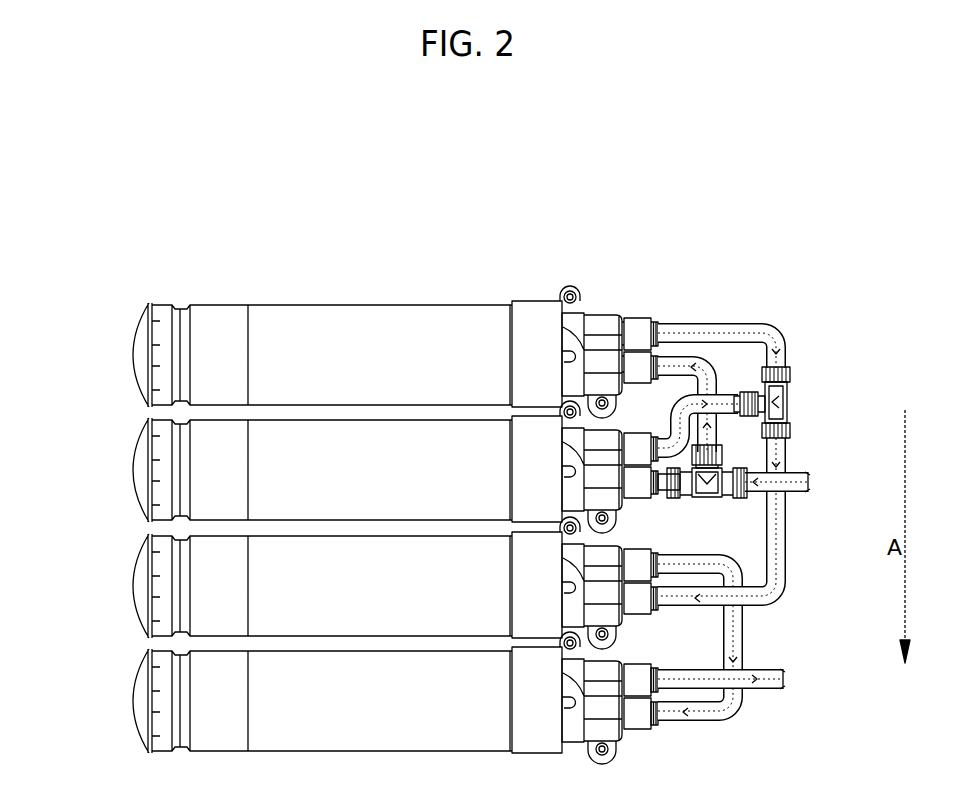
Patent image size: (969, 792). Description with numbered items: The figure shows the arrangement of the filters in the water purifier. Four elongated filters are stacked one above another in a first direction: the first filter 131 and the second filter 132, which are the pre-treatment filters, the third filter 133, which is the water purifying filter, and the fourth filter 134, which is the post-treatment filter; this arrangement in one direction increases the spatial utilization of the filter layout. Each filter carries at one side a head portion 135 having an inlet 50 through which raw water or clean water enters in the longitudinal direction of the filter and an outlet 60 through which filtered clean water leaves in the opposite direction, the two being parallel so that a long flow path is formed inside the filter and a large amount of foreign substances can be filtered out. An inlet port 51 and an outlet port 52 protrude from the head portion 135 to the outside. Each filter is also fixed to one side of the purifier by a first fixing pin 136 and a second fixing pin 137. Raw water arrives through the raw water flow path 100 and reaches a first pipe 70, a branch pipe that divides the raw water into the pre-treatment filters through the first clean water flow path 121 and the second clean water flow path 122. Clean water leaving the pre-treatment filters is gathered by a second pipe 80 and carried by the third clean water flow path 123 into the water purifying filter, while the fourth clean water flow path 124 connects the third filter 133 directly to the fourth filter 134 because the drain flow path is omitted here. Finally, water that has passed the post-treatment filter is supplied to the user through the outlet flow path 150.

The first filter 131 is at (100, 345).
The second filter 132 is at (100, 465).
The third filter 133 is at (100, 591).
The fourth filter 134 is at (100, 701).
The head portion 135 is at (615, 286).
The first fixing pin 136 is at (568, 289).
The second fixing pin 137 is at (618, 404).
The outlet 60 is at (638, 318).
The inlet 50 is at (654, 362).
The inlet port 51 is at (655, 720).
The outlet port 52 is at (656, 672).
The first pipe 70 is at (704, 510).
The second pipe 80 is at (812, 398).
The raw water flow path 100 is at (812, 476).
The first clean water flow path 121 is at (710, 368).
The second clean water flow path 122 is at (665, 492).
The third clean water flow path 123 is at (788, 523).
The fourth clean water flow path 124 is at (745, 636).
The outlet flow path 150 is at (762, 690).